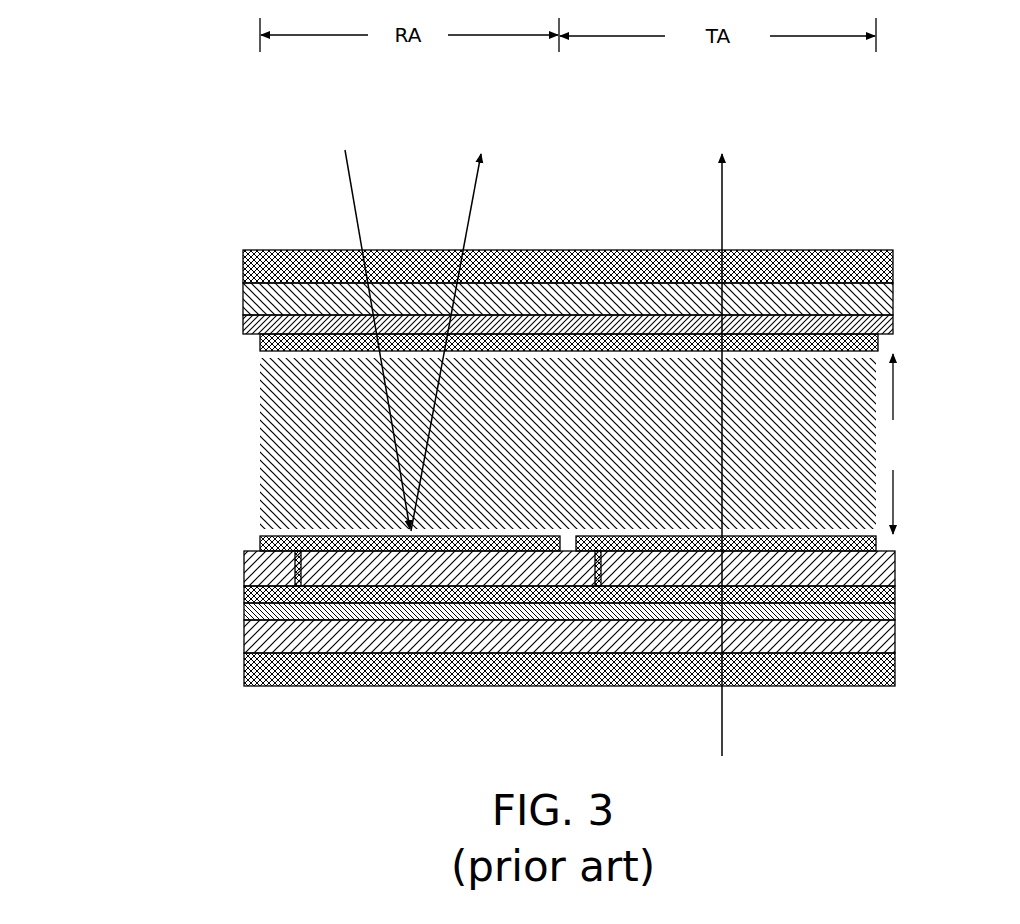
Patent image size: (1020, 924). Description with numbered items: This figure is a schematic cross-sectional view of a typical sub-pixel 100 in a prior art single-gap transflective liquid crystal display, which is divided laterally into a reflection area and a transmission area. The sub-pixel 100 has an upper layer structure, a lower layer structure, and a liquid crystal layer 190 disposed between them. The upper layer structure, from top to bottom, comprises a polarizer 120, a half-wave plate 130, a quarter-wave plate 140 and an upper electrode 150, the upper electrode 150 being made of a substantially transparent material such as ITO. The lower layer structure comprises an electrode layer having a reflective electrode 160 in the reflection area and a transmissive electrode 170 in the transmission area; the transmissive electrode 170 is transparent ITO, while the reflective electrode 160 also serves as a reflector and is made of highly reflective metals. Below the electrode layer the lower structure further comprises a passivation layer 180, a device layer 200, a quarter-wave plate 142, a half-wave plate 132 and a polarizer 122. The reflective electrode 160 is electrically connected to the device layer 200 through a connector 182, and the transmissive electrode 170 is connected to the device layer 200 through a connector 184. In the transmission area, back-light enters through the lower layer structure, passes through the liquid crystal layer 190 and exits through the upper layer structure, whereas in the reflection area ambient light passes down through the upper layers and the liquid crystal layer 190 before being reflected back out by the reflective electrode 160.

The sub-pixel 100 is at (157, 251).
The polarizer 120 is at (235, 245).
The half-wave plate 130 is at (235, 292).
The quarter-wave plate 140 is at (235, 316).
The upper electrode 150 is at (252, 334).
The reflective electrode 160 is at (500, 527).
The transmissive electrode 170 is at (765, 527).
The passivation layer 180 is at (236, 549).
The connector 182 is at (296, 562).
The connector 184 is at (596, 562).
The liquid crystal layer 190 is at (217, 428).
The device layer 200 is at (236, 586).
The quarter-wave plate 142 is at (236, 603).
The half-wave plate 132 is at (236, 620).
The polarizer 122 is at (236, 653).